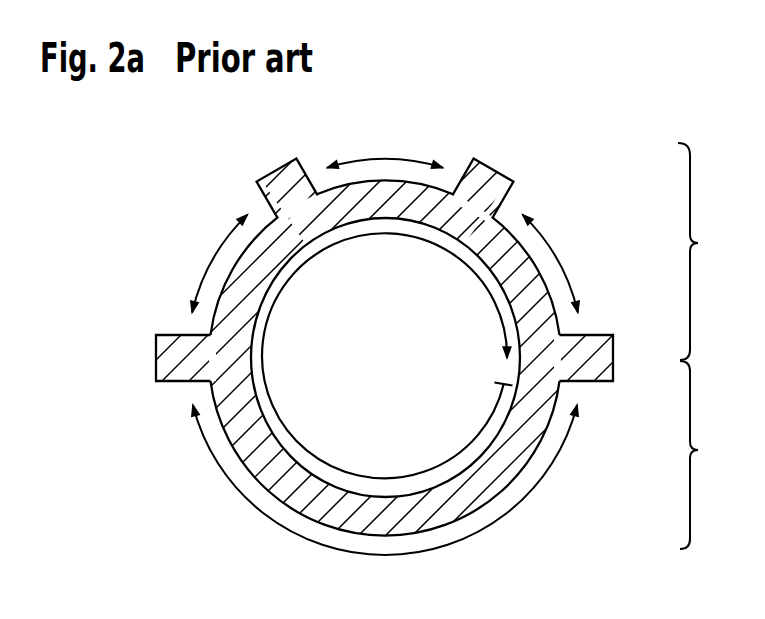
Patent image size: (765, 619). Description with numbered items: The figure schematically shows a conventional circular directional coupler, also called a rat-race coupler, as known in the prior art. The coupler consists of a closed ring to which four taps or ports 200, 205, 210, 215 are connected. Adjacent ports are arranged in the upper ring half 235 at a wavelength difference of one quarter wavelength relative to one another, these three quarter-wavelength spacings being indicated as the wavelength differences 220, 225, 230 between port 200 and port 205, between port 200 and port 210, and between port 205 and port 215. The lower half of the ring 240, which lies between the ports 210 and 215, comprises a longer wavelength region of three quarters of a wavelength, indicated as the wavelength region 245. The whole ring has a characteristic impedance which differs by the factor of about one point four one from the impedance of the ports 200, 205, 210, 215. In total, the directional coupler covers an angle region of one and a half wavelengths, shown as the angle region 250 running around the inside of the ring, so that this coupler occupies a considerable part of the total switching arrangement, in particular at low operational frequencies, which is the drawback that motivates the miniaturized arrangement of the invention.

The port 200 is at (276, 170).
The port 205 is at (497, 171).
The port 210 is at (156, 357).
The port 215 is at (603, 383).
The wavelength difference of λ/4 220 is at (413, 163).
The wavelength difference of λ/4 225 is at (205, 282).
The wavelength difference of λ/4 230 is at (572, 281).
The upper ring half 235 is at (711, 251).
The lower half of the ring 240 is at (712, 455).
The wavelength region of 3λ/4 245 is at (228, 490).
The angle region of 1.5λ 250 is at (282, 423).